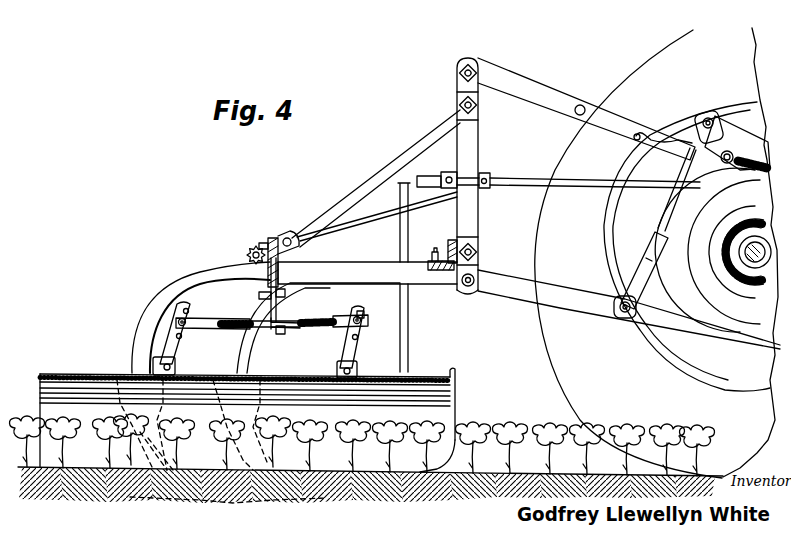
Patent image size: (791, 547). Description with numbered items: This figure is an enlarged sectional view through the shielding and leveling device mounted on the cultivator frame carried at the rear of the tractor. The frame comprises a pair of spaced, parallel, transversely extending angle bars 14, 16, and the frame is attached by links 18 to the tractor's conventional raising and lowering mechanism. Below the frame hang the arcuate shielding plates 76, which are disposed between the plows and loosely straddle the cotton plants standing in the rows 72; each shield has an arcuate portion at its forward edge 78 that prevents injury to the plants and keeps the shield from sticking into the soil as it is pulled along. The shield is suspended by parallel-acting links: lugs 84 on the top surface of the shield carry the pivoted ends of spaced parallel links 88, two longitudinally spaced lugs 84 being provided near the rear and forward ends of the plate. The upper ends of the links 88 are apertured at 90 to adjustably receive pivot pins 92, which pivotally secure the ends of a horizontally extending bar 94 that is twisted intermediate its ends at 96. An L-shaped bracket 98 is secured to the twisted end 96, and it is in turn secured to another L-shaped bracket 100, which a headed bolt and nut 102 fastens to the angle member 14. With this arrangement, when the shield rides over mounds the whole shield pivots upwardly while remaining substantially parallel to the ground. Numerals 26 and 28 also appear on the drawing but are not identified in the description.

The angle bar 14 is at (273, 237).
The angle bar 16 is at (452, 244).
The links 18 is at (386, 165).
The hood 26 is at (180, 277).
The buried blade 28 is at (256, 500).
The rows 72 is at (545, 431).
The arcuate shielding plates 76 is at (448, 410).
The forward edge 78 is at (438, 470).
The lugs 84 is at (174, 368).
The link 88 is at (170, 337).
The apertures 90 is at (364, 316).
The pivot pins 92 is at (180, 320).
The horizontally extending bar 94 is at (201, 318).
The twisted end 96 is at (262, 331).
The L-shaped bracket 98 is at (279, 311).
The L-shaped bracket 100 is at (268, 274).
The headed bolt and nut 102 is at (250, 251).